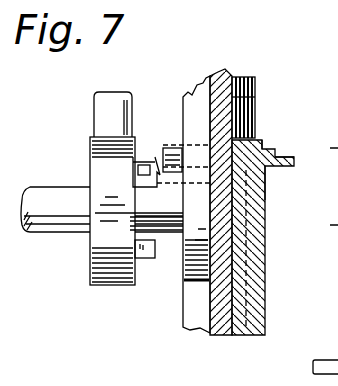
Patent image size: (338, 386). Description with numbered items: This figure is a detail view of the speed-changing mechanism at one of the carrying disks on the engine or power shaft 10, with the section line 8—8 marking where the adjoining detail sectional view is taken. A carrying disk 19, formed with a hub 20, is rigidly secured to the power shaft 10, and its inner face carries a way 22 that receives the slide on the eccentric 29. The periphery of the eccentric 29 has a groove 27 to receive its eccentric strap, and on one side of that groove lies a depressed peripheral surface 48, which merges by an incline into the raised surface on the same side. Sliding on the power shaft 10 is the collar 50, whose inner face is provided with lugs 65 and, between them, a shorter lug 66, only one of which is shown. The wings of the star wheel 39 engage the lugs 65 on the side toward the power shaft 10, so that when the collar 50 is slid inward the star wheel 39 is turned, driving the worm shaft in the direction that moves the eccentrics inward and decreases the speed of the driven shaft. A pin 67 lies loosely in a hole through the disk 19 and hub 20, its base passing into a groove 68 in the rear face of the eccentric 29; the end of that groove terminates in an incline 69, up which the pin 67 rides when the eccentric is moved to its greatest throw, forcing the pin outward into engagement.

The section line 8— 8 is at (183, 358).
The engine or power shaft 10 is at (54, 230).
The carrying disks 19 is at (223, 74).
The hubs 20 is at (193, 228).
The ways 22 is at (247, 97).
The grooves 27 is at (286, 156).
The eccentric 29 is at (262, 243).
The star wheel 39 is at (172, 146).
The depressed peripheral surface 48 is at (268, 143).
The sliding collar 50 is at (100, 183).
The lugs 65 is at (146, 260).
The shorter lugs 66 is at (151, 213).
The pins 67 is at (146, 161).
The grooves 68 is at (256, 272).
The incline 69 is at (268, 192).